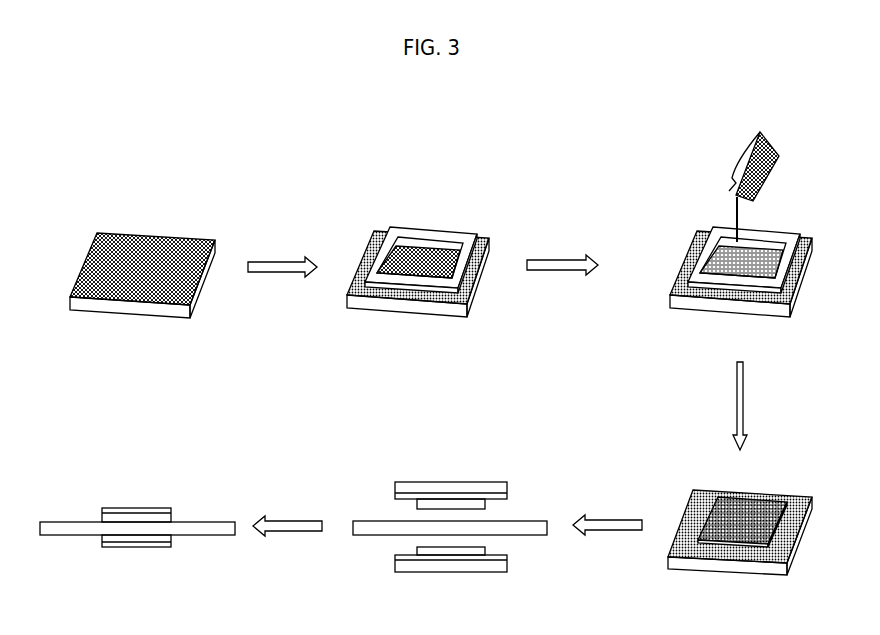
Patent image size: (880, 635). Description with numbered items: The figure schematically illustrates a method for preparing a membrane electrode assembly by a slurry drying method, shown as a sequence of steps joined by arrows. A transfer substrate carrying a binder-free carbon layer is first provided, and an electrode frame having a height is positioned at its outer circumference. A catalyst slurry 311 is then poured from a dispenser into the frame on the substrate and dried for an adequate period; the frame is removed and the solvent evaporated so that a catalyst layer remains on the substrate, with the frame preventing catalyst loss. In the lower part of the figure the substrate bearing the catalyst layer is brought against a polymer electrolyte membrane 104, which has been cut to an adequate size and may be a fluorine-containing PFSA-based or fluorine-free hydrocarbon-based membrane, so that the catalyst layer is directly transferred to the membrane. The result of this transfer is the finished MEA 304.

The catalyst slurry 311 is at (780, 152).
The polymer electrolyte membrane 104 is at (532, 527).
The MEA 304 is at (108, 557).